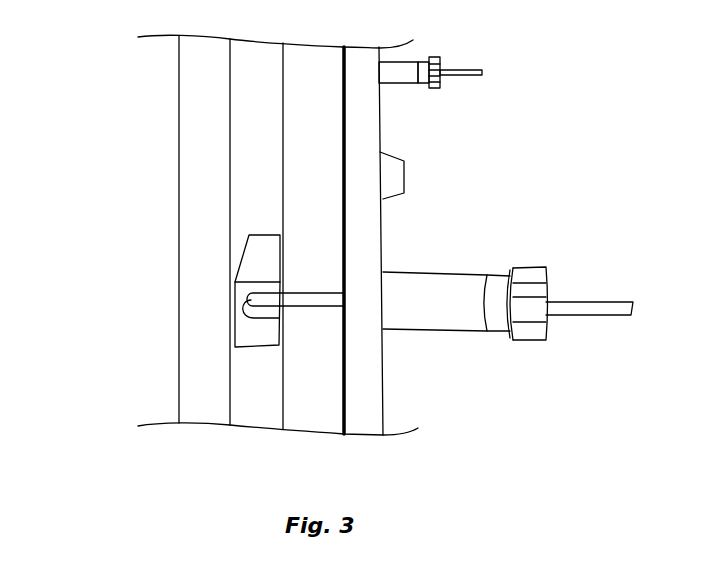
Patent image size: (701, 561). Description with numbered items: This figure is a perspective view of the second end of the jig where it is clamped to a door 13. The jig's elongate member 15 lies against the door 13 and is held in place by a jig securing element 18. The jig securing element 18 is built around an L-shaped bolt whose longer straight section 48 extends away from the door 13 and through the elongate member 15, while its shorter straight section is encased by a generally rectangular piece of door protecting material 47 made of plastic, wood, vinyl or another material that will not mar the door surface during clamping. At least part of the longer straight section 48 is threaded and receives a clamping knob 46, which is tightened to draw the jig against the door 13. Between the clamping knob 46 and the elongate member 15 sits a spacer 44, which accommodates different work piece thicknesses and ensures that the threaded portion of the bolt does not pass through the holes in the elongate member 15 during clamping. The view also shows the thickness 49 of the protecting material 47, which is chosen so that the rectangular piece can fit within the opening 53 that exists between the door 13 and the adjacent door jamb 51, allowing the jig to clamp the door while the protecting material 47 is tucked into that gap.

The door 13 is at (302, 81).
The opening 53 is at (255, 127).
The elongate member 15 is at (385, 364).
The jig securing element 18 is at (534, 269).
The spacer 44 is at (497, 283).
The clamping knob 46 is at (535, 288).
The door protecting material 47 is at (245, 283).
The longer straight section 48 is at (612, 310).
The thickness 49 is at (247, 297).
The door jamb 51 is at (205, 244).